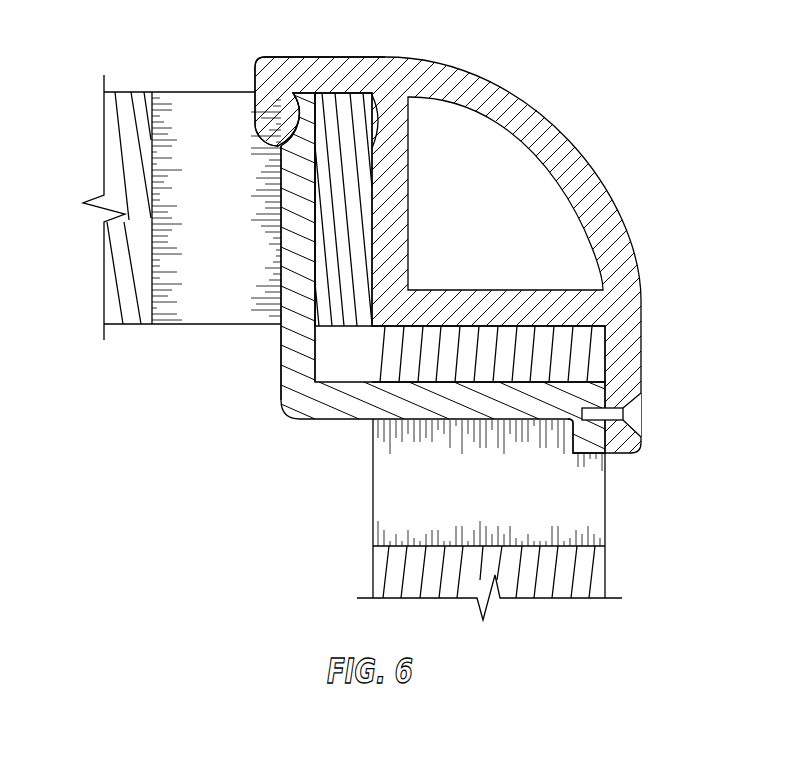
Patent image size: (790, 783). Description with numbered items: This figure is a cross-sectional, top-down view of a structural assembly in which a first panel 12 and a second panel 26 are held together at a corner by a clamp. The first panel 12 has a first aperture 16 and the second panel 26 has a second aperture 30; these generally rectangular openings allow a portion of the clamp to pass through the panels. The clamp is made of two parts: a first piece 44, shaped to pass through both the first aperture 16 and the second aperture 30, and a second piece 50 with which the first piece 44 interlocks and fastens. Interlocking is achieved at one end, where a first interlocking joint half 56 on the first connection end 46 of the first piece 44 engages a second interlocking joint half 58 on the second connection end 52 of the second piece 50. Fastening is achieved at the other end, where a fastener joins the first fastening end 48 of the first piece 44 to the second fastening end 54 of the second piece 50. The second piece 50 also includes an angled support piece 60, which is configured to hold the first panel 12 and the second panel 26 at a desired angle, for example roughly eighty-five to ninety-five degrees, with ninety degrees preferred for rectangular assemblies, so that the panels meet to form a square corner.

The first panel 12 is at (123, 168).
The first aperture 16 is at (198, 280).
The second panel 26 is at (388, 575).
The second aperture 30 is at (452, 499).
The first piece 44 is at (287, 343).
The first connection end 46 is at (290, 177).
The first fastening end 48 is at (578, 437).
The second piece 50 is at (473, 97).
The second connection end 52 is at (277, 72).
The second fastening end 54 is at (633, 413).
The first interlocking joint half 56 is at (307, 126).
The second interlocking joint half 58 is at (297, 130).
The angled support piece 60 is at (402, 273).